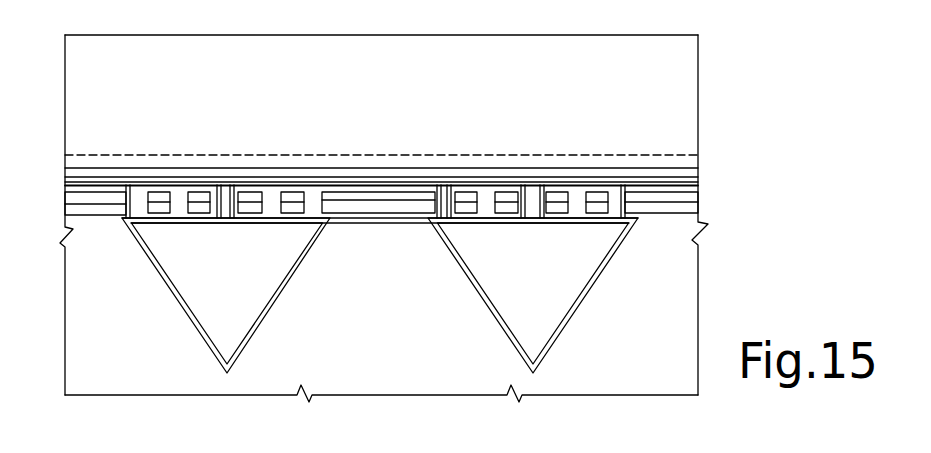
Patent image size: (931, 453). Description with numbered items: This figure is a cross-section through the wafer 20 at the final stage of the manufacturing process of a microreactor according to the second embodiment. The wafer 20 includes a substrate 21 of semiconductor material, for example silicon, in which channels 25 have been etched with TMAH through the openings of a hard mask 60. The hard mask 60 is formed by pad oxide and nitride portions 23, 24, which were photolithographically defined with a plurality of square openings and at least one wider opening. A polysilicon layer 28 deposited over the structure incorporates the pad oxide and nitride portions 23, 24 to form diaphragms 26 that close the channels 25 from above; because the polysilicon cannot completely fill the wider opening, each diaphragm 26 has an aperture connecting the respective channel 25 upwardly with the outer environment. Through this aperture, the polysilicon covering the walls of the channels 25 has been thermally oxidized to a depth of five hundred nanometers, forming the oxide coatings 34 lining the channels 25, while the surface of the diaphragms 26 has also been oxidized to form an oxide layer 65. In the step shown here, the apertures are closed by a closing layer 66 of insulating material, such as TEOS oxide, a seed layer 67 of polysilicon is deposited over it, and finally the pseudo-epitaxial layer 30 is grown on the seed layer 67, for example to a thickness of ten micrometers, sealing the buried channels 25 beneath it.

The wafer 20 is at (720, 330).
The substrate 21 is at (85, 380).
The pad oxide layer 23 is at (72, 207).
The nitride layer 24 is at (689, 194).
The channels 25 is at (205, 292).
The diaphragms 26 is at (166, 174).
The polysilicon layer 28 is at (568, 172).
The pseudo-epitaxial layer 30 is at (90, 86).
The oxide coatings 34 is at (188, 321).
The hard mask 60 is at (253, 190).
The oxide layer 65 is at (370, 191).
The closing layer 66 is at (82, 174).
The seed layer 67 is at (606, 153).